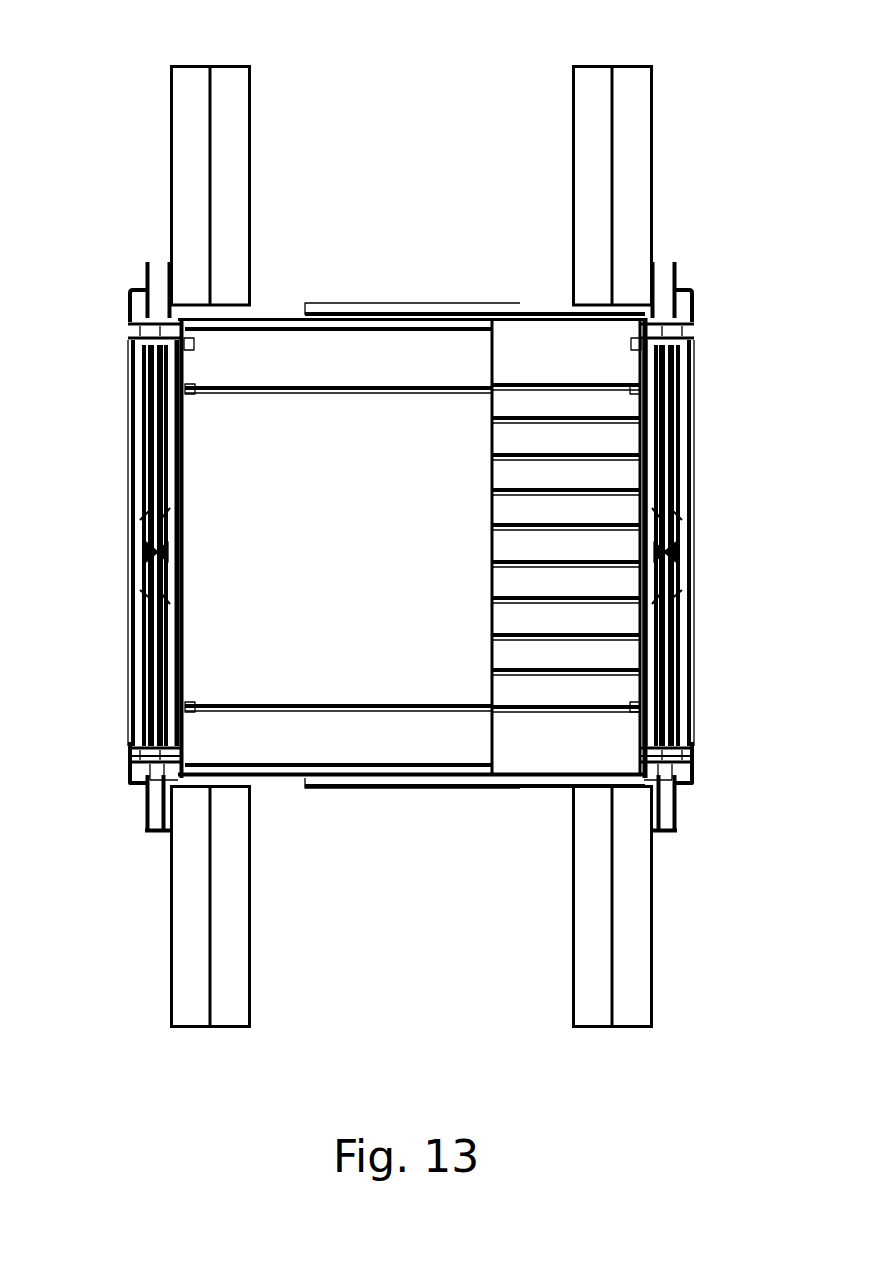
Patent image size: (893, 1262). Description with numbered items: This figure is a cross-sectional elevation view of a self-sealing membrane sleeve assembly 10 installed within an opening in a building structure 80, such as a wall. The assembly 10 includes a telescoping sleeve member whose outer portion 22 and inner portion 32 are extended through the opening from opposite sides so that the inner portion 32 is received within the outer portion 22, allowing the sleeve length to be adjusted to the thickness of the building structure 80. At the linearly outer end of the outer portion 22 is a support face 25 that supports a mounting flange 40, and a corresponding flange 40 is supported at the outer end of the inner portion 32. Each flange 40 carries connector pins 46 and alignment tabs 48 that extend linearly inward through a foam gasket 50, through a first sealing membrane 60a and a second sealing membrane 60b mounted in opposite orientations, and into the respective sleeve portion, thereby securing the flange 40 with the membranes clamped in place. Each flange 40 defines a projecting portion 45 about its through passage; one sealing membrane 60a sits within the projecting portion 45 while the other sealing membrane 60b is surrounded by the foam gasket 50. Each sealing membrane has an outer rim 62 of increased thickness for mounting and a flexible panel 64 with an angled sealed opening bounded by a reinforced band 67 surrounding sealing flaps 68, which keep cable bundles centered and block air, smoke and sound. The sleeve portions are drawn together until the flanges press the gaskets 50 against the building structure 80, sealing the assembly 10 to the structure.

The self-sealing membrane sleeve assembly 10 is at (385, 292).
The outer portion 22 is at (498, 312).
The support face 25 is at (190, 343).
The inner portion 32 is at (285, 306).
The mounting flange 40 is at (124, 288).
The projecting portion 45 is at (140, 757).
The connector pins 46 is at (200, 390).
The alignment tabs 48 is at (142, 328).
The foam gasket 50 is at (158, 262).
The sealing membrane 60a is at (132, 378).
The sealing membrane 60b is at (162, 445).
The outer rim 62 is at (152, 768).
The flexible panel 64 is at (140, 635).
The reinforced band 67 is at (150, 518).
The sealing flaps 68 is at (158, 552).
The building structure 80 is at (241, 60).